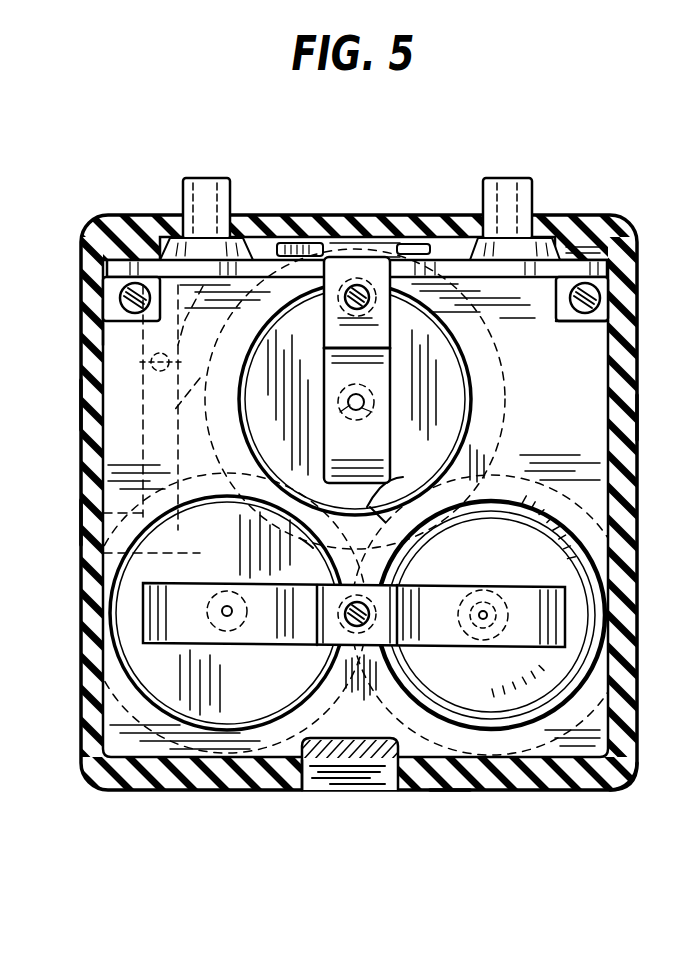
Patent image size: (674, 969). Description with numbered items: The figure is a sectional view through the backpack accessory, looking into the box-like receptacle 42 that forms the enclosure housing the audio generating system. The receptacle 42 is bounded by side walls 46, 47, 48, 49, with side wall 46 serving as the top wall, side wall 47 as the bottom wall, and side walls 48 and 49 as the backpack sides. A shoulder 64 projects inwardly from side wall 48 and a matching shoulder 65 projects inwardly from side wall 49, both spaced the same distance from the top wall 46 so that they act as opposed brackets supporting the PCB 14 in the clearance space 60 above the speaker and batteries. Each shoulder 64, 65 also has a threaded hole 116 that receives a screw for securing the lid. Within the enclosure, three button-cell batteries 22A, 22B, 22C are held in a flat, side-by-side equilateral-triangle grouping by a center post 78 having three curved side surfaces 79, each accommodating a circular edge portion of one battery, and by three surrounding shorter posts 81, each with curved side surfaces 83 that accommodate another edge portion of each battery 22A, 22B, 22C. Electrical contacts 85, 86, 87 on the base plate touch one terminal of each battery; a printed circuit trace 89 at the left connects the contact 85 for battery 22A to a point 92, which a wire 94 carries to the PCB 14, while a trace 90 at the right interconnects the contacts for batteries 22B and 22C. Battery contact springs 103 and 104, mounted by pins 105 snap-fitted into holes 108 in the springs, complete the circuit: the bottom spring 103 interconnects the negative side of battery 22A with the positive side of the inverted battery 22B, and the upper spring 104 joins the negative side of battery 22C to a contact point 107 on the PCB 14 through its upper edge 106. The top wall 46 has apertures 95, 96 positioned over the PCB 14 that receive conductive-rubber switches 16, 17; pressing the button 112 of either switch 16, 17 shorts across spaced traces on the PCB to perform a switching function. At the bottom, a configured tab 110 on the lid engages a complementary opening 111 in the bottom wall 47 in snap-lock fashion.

The PCB 14 is at (577, 217).
The switch 16 is at (240, 192).
The switch 17 is at (542, 168).
The battery 22A is at (107, 680).
The battery 22B is at (497, 792).
The battery 22C is at (284, 320).
The receptacle 42 is at (631, 792).
The side wall 46 is at (372, 240).
The side wall 47 is at (441, 792).
The side wall 48 is at (82, 411).
The side wall 49 is at (616, 418).
The space 60 is at (265, 236).
The shoulder 64 is at (103, 323).
The shoulder 65 is at (590, 323).
The center post 78 is at (386, 525).
The curved side surfaces 79 is at (347, 494).
The shorter posts 81 is at (200, 486).
The curved side surfaces 83 is at (240, 433).
The electrical contact 85 is at (226, 630).
The electrical contact 86 is at (483, 645).
The electrical contact 87 is at (357, 412).
The printed circuit trace 89 is at (85, 521).
The printed circuit trace 90 is at (473, 314).
The point 92 is at (151, 419).
The wire 94 is at (195, 349).
The aperture 95 is at (180, 233).
The aperture 96 is at (540, 238).
The battery contact spring 103 is at (142, 577).
The battery contact spring 104 is at (178, 415).
The pins 105 is at (418, 383).
The upper edge 106 is at (405, 240).
The contact point 107 is at (345, 226).
The holes 108 is at (345, 305).
The tab 110 is at (337, 790).
The opening 111 is at (302, 800).
The button 112 is at (207, 178).
The threaded holes 116 is at (110, 292).